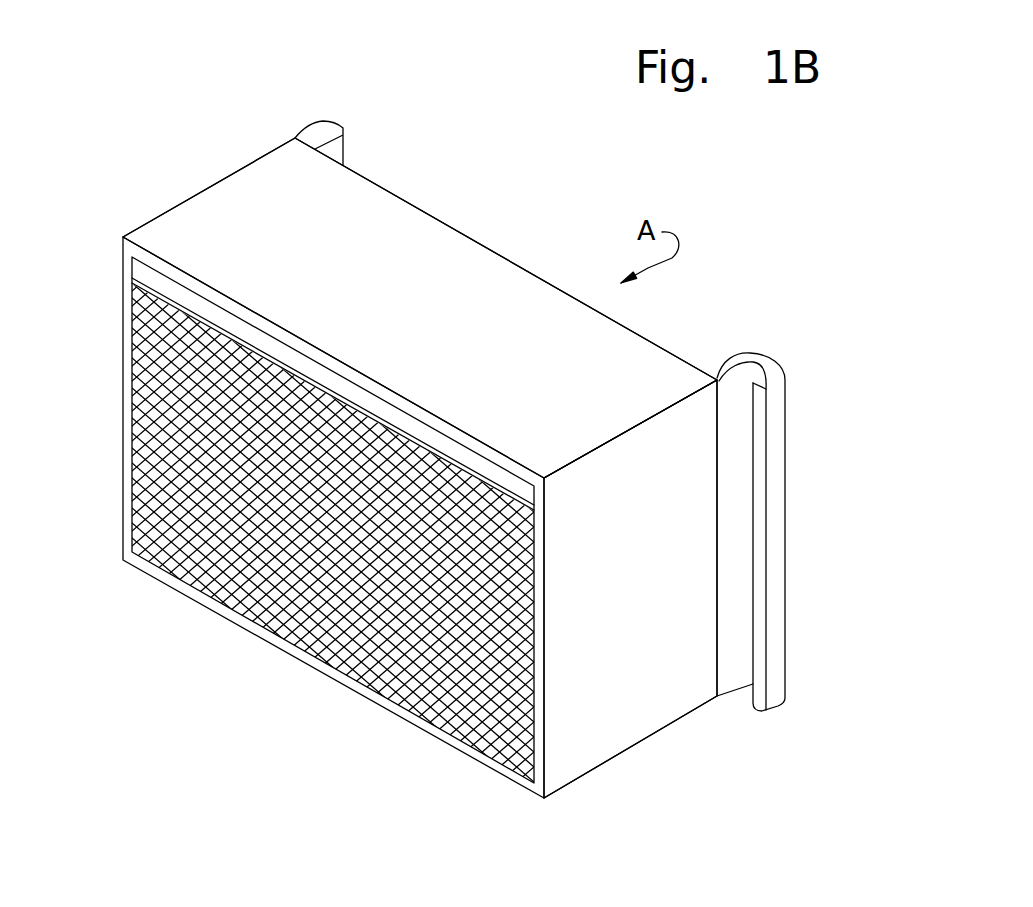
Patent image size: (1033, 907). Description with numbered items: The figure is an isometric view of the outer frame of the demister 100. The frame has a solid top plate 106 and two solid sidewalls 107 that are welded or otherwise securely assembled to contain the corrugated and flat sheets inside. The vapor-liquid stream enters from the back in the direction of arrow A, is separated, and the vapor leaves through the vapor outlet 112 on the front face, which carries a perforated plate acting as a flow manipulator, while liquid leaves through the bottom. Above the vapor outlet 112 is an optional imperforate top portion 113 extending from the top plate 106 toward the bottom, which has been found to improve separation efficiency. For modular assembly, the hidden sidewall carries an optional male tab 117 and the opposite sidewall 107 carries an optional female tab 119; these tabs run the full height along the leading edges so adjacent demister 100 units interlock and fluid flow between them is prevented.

The demister 100 is at (150, 163).
The top plate 106 is at (465, 322).
The sidewall 107 is at (665, 622).
The vapor outlet 112 is at (153, 612).
The imperforate top portion 113 is at (157, 279).
The male tab 117 is at (344, 128).
The female tab 119 is at (786, 380).